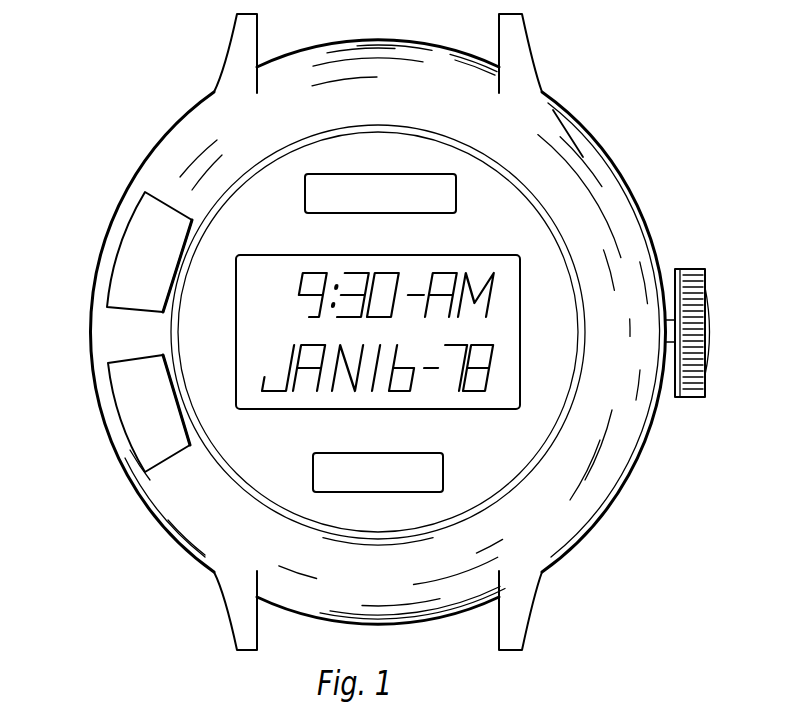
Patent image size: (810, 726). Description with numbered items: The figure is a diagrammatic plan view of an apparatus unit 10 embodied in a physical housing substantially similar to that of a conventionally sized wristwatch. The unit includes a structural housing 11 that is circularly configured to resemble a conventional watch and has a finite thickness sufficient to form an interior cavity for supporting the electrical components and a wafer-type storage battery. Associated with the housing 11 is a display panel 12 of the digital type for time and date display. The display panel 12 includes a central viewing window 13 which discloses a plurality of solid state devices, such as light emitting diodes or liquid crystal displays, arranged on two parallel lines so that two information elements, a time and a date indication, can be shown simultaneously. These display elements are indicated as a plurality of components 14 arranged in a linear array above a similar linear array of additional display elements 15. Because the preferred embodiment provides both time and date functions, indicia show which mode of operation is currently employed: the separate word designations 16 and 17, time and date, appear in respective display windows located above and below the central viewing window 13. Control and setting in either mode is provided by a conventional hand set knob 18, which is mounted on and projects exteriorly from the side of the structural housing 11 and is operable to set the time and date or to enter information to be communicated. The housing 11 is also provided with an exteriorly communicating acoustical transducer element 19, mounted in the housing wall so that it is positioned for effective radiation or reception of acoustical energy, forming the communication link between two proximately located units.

The apparatus unit 10 is at (153, 520).
The structural housing 11 is at (557, 100).
The display panel 12 is at (505, 199).
The central viewing window 13 is at (525, 297).
The display components 14 is at (440, 265).
The additional display elements 15 is at (296, 402).
The time word designation 16 is at (360, 175).
The date word designation 17 is at (434, 468).
The hand set knob 18 is at (703, 288).
The acoustical transducer element 19 is at (123, 378).